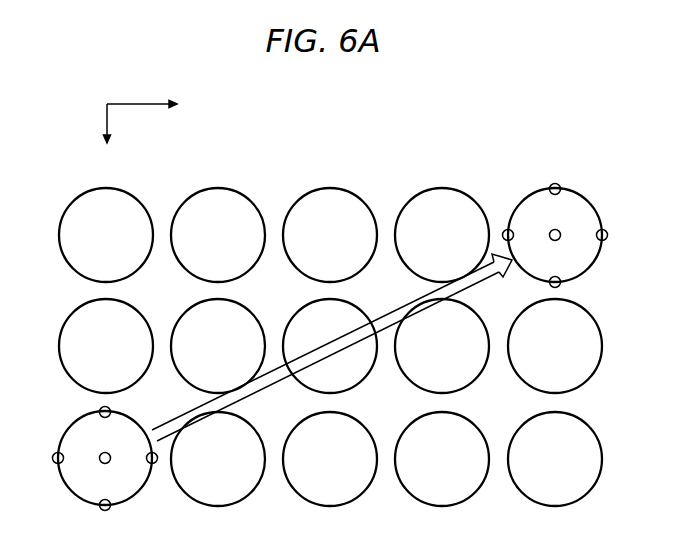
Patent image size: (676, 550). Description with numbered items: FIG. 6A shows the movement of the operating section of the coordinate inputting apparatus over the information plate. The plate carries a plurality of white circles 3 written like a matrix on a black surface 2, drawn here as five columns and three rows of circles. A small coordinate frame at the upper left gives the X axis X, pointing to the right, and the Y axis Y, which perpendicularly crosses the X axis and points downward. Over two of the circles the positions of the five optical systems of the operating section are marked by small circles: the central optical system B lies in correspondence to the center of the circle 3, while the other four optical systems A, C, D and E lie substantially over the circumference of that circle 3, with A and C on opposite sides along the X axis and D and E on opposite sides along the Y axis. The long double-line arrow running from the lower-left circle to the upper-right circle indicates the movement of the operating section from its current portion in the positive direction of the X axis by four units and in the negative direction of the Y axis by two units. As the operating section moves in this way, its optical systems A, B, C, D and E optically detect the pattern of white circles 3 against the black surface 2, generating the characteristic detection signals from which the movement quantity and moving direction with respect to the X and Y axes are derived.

The black surface 2 is at (162, 222).
The white circles 3 is at (88, 200).
The optical system A is at (277, 341).
The optical system B is at (330, 337).
The optical system C is at (375, 350).
The optical system D is at (330, 292).
The optical system E is at (330, 394).
The X axis X is at (149, 105).
The Y axis Y is at (106, 135).